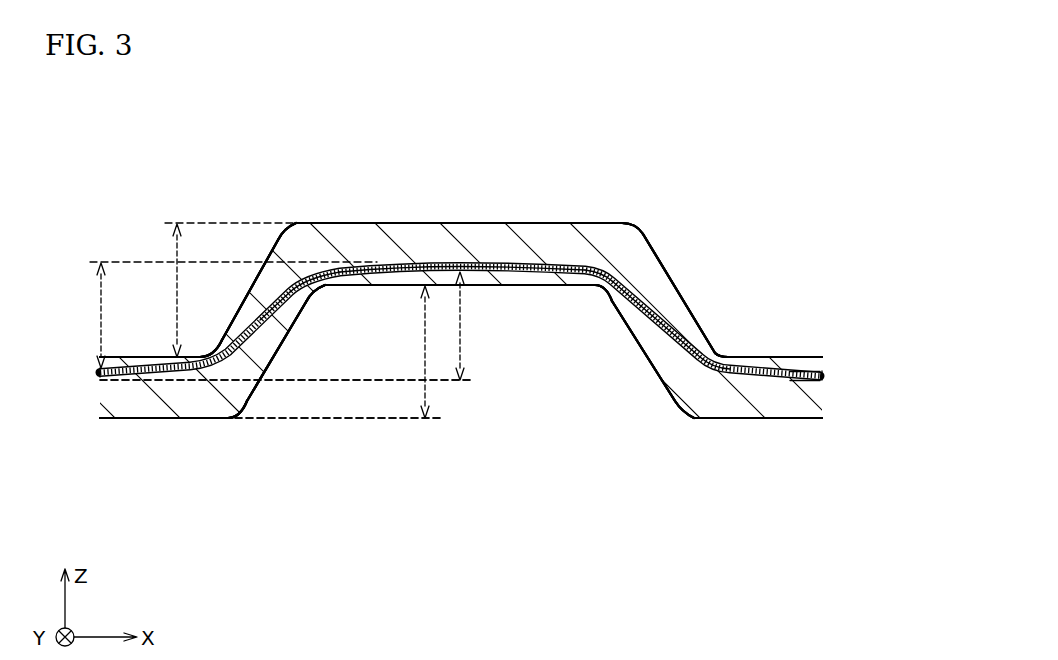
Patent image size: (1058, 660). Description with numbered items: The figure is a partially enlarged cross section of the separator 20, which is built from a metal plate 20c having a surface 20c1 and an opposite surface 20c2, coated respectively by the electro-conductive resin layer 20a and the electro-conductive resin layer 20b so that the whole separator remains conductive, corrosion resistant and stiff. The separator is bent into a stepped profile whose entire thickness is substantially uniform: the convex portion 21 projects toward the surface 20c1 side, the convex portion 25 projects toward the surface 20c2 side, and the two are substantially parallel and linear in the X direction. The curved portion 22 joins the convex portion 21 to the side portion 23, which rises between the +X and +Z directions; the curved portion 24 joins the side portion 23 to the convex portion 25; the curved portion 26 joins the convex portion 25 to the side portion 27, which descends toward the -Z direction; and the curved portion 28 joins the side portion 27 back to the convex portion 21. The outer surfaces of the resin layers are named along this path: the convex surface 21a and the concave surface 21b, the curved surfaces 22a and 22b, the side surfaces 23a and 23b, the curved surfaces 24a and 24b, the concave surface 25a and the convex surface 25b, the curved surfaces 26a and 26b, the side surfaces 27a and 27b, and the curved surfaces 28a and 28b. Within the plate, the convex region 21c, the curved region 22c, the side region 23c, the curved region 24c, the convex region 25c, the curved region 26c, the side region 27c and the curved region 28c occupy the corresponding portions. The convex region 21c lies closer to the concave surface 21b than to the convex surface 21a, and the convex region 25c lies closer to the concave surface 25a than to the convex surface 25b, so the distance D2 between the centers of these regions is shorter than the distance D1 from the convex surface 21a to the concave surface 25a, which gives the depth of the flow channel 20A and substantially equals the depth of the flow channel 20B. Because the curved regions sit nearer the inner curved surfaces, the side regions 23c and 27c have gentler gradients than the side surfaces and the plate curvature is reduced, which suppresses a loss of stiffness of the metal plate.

The separator 20 is at (732, 208).
The flow channel 20A is at (483, 416).
The flow channel 20B is at (145, 314).
The electro-conductive resin layer 20a is at (824, 406).
The electro-conductive resin layer 20b is at (824, 361).
The metal plate 20c is at (824, 375).
The surface 20c1 is at (806, 382).
The surface 20c2 is at (805, 368).
The convex portion 21 is at (128, 420).
The convex surface 21a is at (176, 420).
The concave surface 21b is at (118, 357).
The convex region 21c is at (100, 372).
The curved portion 22 is at (232, 420).
The curved surface 22a is at (243, 418).
The curved surface 22b is at (207, 356).
The curved region 22c is at (198, 420).
The side portion 23 is at (276, 344).
The side surface 23a is at (300, 318).
The side surface 23b is at (251, 287).
The side region 23c is at (308, 300).
The curved portion 24 is at (297, 255).
The curved surface 24a is at (322, 287).
The curved surface 24b is at (288, 222).
The curved region 24c is at (323, 258).
The convex portion 25 is at (497, 238).
The concave surface 25a is at (538, 287).
The convex surface 25b is at (437, 222).
The convex region 25c is at (410, 257).
The curved portion 26 is at (622, 232).
The curved surface 26a is at (604, 289).
The curved surface 26b is at (637, 230).
The curved region 26c is at (610, 258).
The side portion 27 is at (673, 312).
The side surface 27a is at (648, 362).
The side surface 27b is at (686, 270).
The side region 27c is at (640, 283).
The curved portion 28 is at (663, 397).
The curved surface 28a is at (686, 420).
The curved surface 28b is at (713, 353).
The curved region 28c is at (706, 370).
The distance D1 is at (290, 321).
The distance D2 is at (269, 321).